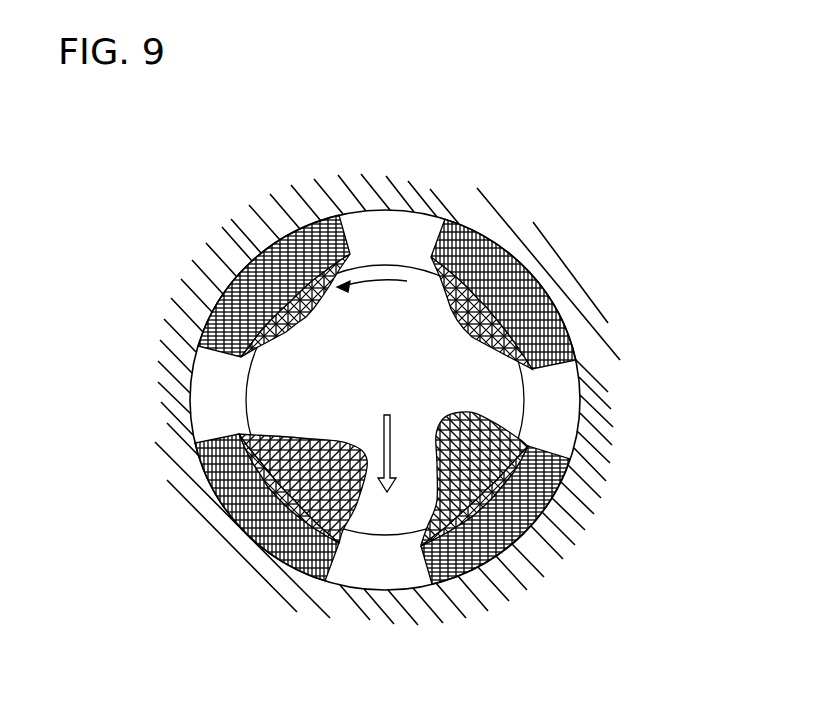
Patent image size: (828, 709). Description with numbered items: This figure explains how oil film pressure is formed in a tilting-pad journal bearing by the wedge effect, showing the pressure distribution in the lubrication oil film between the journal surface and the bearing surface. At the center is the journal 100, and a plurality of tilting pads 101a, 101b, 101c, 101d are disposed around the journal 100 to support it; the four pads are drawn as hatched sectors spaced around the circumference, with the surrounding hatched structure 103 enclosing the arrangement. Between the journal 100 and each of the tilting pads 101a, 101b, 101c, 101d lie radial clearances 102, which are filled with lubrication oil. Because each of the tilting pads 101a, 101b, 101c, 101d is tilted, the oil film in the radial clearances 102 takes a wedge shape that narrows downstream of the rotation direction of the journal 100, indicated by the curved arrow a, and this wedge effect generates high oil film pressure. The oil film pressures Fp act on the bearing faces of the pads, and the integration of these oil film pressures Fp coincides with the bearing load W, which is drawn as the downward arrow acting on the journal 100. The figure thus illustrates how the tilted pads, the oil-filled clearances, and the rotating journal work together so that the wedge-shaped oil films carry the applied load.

The journal 100 is at (528, 392).
The tilting pad 101a is at (527, 270).
The tilting pad 101b is at (240, 240).
The tilting pad 101c is at (240, 520).
The tilting pad 101d is at (548, 503).
The radial clearance 102 is at (310, 530).
The housing 103 is at (450, 196).
The bearing load W is at (385, 469).
The oil film pressure Fp is at (322, 441).
The rotation direction a is at (383, 283).